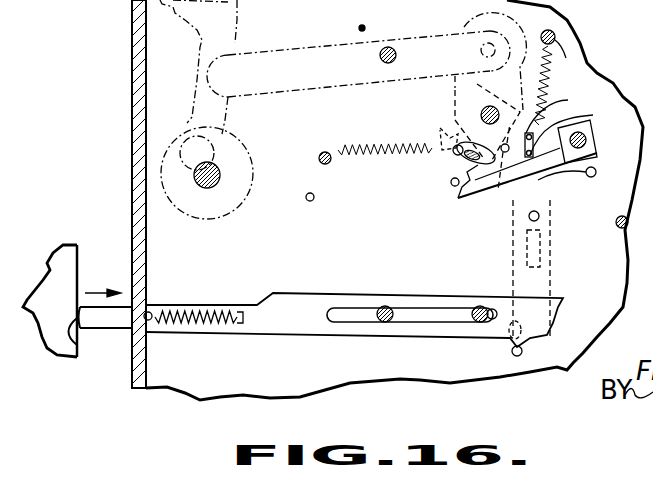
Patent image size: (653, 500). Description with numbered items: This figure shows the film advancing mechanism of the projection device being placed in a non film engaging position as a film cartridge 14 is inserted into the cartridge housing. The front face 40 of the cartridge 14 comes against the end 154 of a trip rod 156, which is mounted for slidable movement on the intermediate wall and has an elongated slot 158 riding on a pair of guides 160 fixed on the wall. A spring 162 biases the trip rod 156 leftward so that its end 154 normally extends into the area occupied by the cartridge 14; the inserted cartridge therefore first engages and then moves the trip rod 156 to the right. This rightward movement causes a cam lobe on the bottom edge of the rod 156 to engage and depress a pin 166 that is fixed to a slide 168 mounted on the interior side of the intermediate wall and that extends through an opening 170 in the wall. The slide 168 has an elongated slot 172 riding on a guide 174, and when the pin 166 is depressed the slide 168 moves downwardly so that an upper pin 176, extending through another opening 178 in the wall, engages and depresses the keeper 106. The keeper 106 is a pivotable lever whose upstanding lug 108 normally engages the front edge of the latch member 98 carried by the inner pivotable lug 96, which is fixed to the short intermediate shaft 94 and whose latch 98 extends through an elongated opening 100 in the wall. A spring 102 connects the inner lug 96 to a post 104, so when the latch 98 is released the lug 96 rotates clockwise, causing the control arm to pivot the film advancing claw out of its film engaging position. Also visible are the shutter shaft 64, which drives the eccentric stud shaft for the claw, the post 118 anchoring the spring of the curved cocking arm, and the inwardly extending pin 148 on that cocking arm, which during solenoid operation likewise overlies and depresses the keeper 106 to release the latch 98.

The film cartridge 14 is at (67, 243).
The front face 40 is at (78, 266).
The shaft 64 is at (218, 186).
The intermediate shaft 94 is at (483, 108).
The inner pivotable lug 96 is at (446, 137).
The latch member 98 is at (451, 183).
The elongated opening 100 is at (457, 157).
The spring 102 is at (382, 142).
The post 104 is at (325, 155).
The keeper 106 is at (598, 147).
The upstanding lug 108 is at (456, 190).
The post 118 is at (562, 77).
The pin 148 is at (481, 199).
The end 154 is at (78, 345).
The trip rod 156 is at (297, 298).
The elongated slot 158 is at (432, 320).
The guides 160 is at (384, 307).
The spring 162 is at (202, 326).
The pin 166 is at (512, 350).
The slide 168 is at (553, 265).
The opening 170 is at (525, 350).
The elongated slot 172 is at (527, 250).
The guide 174 is at (540, 215).
The upper pin 176 is at (594, 116).
The opening 178 is at (568, 100).